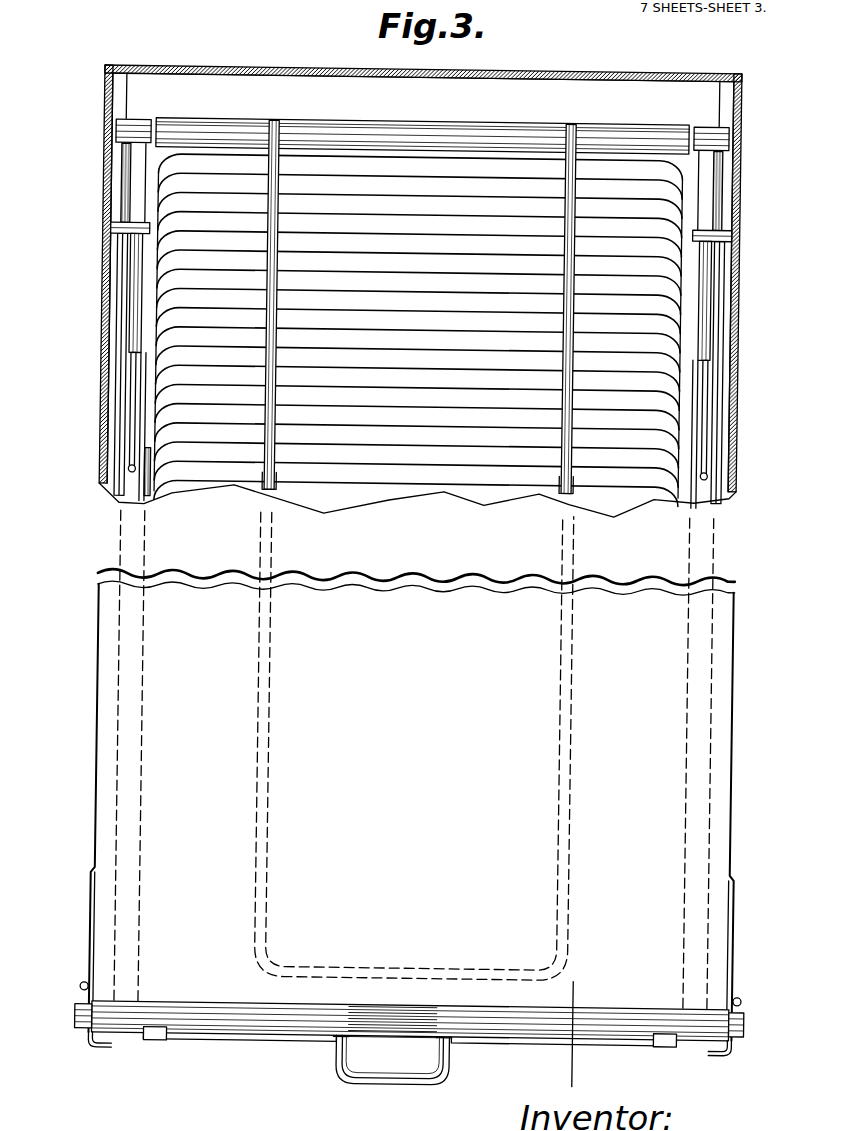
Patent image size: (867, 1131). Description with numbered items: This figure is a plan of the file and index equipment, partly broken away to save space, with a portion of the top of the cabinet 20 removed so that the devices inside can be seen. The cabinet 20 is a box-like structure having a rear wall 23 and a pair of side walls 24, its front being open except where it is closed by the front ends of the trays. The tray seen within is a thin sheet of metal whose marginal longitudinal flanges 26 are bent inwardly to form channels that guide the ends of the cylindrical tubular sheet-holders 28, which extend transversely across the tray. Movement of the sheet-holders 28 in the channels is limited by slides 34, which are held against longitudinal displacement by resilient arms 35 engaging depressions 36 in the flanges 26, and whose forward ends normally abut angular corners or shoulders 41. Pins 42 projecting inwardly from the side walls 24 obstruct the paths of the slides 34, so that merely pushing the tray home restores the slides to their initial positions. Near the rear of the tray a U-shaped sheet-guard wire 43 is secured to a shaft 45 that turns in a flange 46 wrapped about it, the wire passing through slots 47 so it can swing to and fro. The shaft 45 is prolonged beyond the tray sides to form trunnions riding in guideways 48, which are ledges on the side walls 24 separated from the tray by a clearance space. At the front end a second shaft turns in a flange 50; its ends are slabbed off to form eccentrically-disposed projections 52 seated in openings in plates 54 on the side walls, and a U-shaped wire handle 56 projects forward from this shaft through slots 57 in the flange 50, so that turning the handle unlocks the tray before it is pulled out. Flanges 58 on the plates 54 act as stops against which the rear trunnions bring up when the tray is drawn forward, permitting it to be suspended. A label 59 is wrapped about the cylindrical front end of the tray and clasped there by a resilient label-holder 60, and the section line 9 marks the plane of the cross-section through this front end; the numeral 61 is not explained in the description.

The section line 9 is at (571, 1038).
The cabinet 20 is at (422, 70).
The rear wall 23 is at (517, 72).
The side walls 24 is at (125, 446).
The marginal longitudinal flanges 26 is at (146, 352).
The cylindrical tubular sheet-holders 28 is at (154, 494).
The slides 34 is at (140, 303).
The resilient arms 35 is at (145, 417).
The depressions 36 is at (138, 470).
The angular corners or shoulders 41 is at (137, 372).
The pins 42 is at (118, 234).
The wire 43 is at (274, 497).
The shaft 45 is at (142, 125).
The flange 46 is at (428, 125).
The slots 47 is at (273, 126).
The guideways 48 is at (125, 186).
The flange 50 is at (408, 1028).
The eccentrically-disposed projections 52 is at (90, 1022).
The plates 54 is at (93, 988).
The handle 56 is at (412, 1078).
The slots 57 is at (355, 1008).
The flanges 58 is at (113, 1049).
The label 59 is at (256, 1031).
The label-holder 60 is at (165, 1039).
The flange 61 is at (208, 1033).